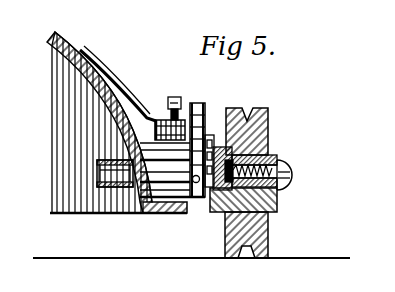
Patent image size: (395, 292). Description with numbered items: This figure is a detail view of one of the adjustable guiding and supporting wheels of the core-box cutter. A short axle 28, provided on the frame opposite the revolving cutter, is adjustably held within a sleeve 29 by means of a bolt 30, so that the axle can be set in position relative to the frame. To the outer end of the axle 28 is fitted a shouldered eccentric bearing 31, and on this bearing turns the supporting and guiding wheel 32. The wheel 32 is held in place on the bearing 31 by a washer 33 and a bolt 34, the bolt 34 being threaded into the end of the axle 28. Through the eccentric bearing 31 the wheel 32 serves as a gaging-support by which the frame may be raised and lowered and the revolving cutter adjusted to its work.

The short axle 28 is at (108, 172).
The sleeve 29 is at (153, 173).
The bolt 30 is at (180, 102).
The shouldered eccentric bearing 31 is at (275, 207).
The supporting and guiding wheel 32 is at (268, 113).
The washer 33 is at (275, 152).
The bolt 34 is at (287, 180).